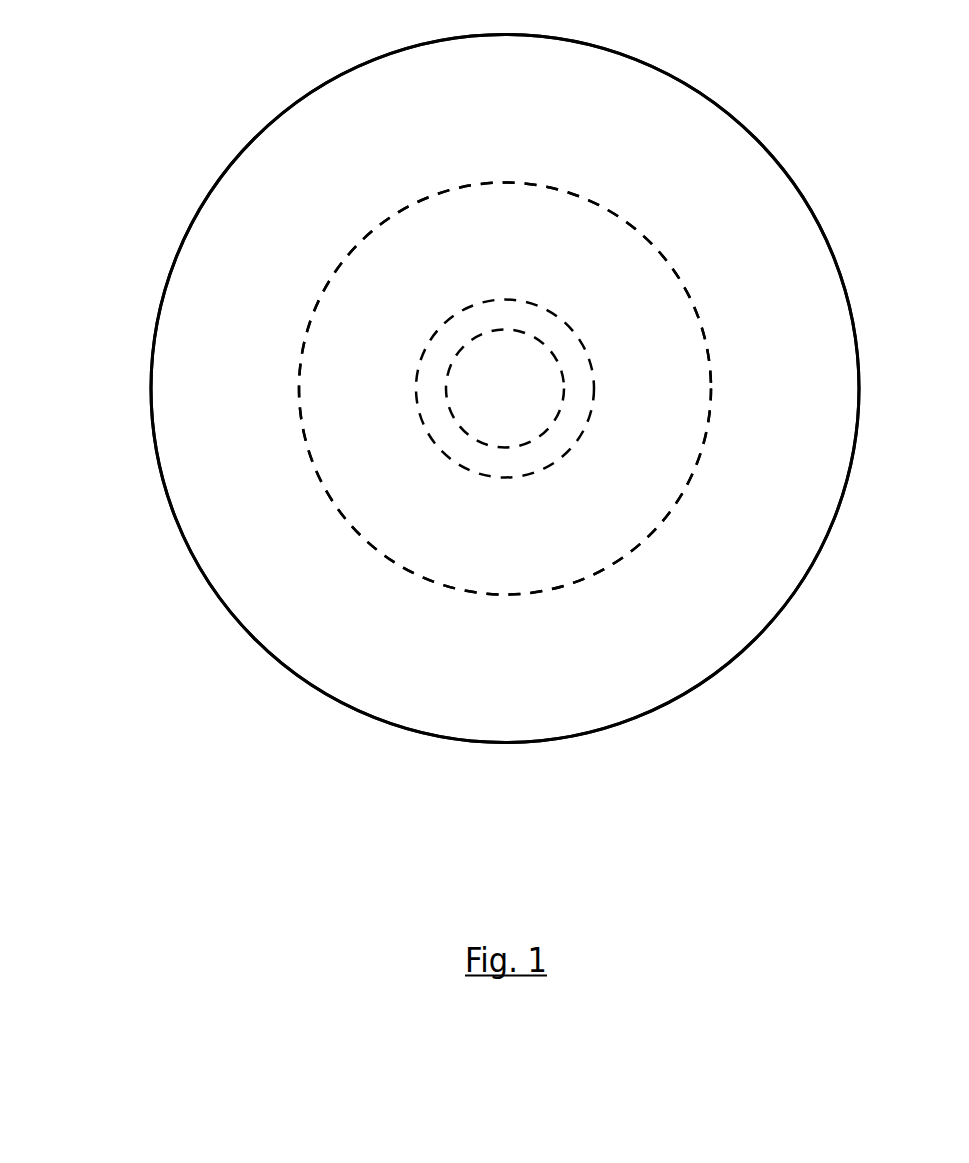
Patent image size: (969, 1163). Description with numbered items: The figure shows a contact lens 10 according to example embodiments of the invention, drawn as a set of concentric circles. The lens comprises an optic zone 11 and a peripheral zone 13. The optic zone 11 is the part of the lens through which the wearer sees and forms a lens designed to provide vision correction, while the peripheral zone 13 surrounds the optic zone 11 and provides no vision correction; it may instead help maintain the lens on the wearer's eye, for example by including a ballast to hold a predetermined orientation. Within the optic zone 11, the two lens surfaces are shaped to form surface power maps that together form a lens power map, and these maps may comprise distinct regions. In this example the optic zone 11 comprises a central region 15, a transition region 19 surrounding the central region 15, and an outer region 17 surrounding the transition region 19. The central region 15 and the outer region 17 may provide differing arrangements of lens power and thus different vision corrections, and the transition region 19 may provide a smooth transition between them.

The contact lens 10 is at (184, 124).
The optic zone 11 is at (662, 250).
The peripheral zone 13 is at (762, 409).
The central region 15 is at (486, 409).
The outer region 17 is at (632, 409).
The transition region 19 is at (443, 352).